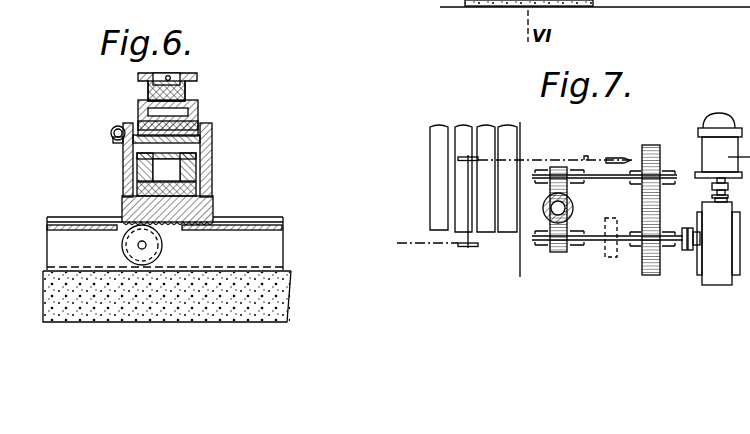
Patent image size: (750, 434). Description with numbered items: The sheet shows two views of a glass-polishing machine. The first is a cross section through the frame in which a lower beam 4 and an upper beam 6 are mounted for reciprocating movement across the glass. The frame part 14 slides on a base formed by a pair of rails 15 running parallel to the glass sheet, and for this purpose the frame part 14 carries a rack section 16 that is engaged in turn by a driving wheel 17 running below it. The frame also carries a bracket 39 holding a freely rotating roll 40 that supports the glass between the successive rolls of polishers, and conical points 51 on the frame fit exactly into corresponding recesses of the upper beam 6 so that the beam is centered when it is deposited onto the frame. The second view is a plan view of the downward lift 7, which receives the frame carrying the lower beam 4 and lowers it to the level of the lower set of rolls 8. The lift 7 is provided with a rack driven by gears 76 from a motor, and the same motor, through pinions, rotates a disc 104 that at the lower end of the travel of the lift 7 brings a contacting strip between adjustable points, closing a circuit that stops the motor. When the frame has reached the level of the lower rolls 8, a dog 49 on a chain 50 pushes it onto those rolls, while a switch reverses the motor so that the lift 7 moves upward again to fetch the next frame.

In FIG. 6, the lower beam 4 is at (213, 170).
In FIG. 6, the upper beam 6 is at (188, 94).
In FIG. 7, the downward lift 7 is at (577, 209).
In FIG. 7, the lower set of rolls 8 is at (461, 186).
In FIG. 6, the frame part 14 is at (123, 180).
In FIG. 6, the rails 15 is at (255, 217).
In FIG. 6, the rack section 16 is at (168, 226).
In FIG. 6, the driving wheel 17 is at (121, 246).
In FIG. 6, the bracket 39 is at (115, 145).
In FIG. 6, the freely rotating roll 40 is at (113, 132).
In FIG. 7, the dog 49 is at (588, 156).
In FIG. 7, the chain 50 is at (533, 159).
In FIG. 6, the conical points 51 is at (150, 95).
In FIG. 7, the gears 76 is at (650, 275).
In FIG. 7, the disc 104 is at (604, 260).